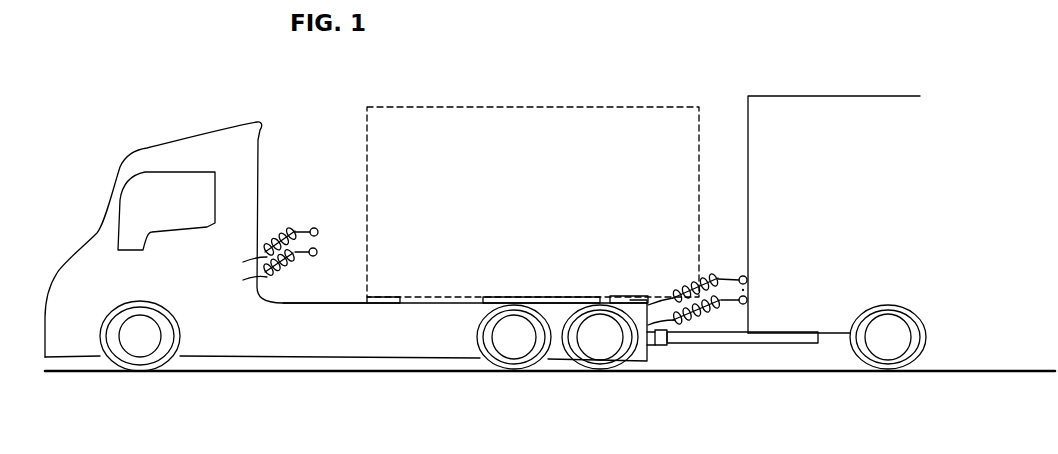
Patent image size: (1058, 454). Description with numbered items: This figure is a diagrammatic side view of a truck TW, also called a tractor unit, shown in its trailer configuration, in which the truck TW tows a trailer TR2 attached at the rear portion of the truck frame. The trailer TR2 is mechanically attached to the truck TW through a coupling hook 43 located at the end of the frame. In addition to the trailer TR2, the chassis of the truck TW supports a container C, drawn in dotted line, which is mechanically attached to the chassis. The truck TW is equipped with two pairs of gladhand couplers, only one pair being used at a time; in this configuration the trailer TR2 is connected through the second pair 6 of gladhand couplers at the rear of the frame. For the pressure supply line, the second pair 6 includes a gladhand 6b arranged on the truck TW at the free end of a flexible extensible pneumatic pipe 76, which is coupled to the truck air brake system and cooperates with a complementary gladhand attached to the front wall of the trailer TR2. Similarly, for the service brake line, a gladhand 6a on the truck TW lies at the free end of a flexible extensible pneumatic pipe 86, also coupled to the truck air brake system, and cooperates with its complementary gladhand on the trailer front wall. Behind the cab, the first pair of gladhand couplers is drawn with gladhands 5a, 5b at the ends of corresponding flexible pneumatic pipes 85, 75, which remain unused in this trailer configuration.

The truck TW is at (165, 142).
The container C is at (537, 103).
The trailer TR2 is at (801, 93).
The front upper flexible cable 85 is at (287, 230).
The front lower flexible cable 75 is at (287, 262).
The front upper connector 5a is at (316, 228).
The front lower connector 5b is at (317, 252).
The flexible extensible pneumatic pipe 86 is at (688, 280).
The flexible extensible pneumatic pipe 76 is at (708, 308).
The gladhand 6a is at (740, 277).
The gladhand 6b is at (747, 300).
The second pair of gladhand couplers 6 is at (760, 286).
The coupling hook 43 is at (665, 350).